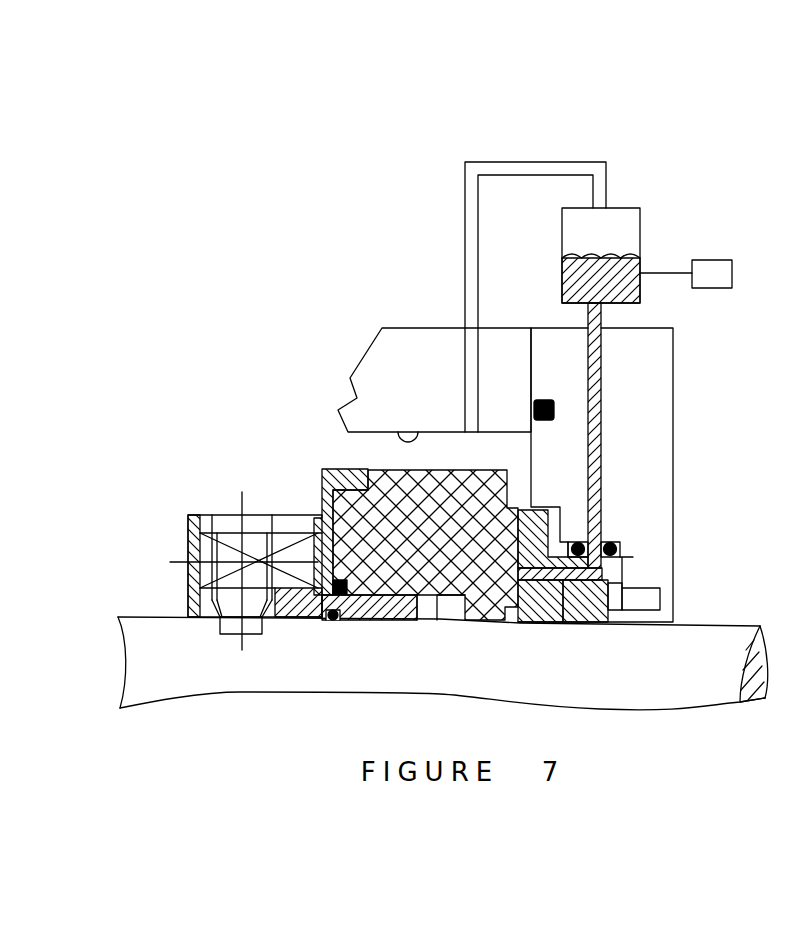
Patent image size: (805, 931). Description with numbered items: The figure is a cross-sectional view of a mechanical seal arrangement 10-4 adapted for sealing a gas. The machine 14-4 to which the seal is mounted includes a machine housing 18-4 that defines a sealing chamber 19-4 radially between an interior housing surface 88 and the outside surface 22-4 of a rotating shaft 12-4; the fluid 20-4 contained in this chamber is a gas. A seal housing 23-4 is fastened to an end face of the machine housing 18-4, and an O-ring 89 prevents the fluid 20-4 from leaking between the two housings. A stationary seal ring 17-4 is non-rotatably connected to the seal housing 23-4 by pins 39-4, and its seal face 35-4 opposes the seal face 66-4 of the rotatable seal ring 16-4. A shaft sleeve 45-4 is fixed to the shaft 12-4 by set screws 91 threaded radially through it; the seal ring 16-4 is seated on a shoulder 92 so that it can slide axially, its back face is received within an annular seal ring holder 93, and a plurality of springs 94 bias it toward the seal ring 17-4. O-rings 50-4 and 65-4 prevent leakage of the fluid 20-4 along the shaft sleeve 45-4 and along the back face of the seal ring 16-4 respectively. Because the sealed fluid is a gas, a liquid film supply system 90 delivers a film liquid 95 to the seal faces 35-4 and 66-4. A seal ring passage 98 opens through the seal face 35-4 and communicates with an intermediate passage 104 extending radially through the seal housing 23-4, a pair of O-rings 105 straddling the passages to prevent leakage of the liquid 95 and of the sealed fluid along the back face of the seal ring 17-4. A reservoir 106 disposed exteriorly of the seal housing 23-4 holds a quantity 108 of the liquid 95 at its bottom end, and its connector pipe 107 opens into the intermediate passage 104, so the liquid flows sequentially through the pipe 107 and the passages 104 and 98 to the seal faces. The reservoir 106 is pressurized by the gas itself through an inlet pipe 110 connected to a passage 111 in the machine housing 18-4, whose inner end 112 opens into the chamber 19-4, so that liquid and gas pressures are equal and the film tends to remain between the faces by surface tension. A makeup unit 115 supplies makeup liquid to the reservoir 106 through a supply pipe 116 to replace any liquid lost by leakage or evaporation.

The seal arrangement 10-4 is at (700, 456).
The rotating shaft 12-4 is at (135, 690).
The machine 14-4 is at (186, 286).
The second rotatable seal ring 16-4 is at (452, 483).
The stationary seal ring 17-4 is at (593, 624).
The machine housing 18-4 is at (392, 328).
The sealing chamber 19-4 is at (347, 447).
The fluid 20-4 is at (310, 448).
The outside surface 22-4 is at (130, 612).
The seal housing 23-4 is at (670, 492).
The seal face 35-4 is at (517, 626).
The pins 39-4 is at (655, 595).
The shaft sleeve 45-4 is at (188, 519).
The O-ring 50-4 is at (332, 622).
The O-ring 65-4 is at (348, 595).
The seal face 66-4 is at (537, 596).
The interior housing surface 88 is at (414, 434).
The O-ring 89 is at (547, 400).
The liquid film supply system 90 is at (612, 148).
The set screws 91 is at (226, 627).
The shoulder 92 is at (417, 600).
The annular seal ring holder 93 is at (330, 493).
The springs 94 is at (295, 540).
The liquid 95 is at (633, 293).
The seal ring passage 98 is at (600, 576).
The intermediate passage 104 is at (598, 415).
The O-rings 105 is at (582, 545).
The reservoir 106 is at (630, 215).
The connector pipe 107 is at (598, 320).
The quantity of fluid 108 is at (605, 300).
The inlet pipe 110 is at (478, 168).
The passage 111 is at (470, 352).
The inner end 112 is at (467, 421).
The makeup unit 115 is at (732, 273).
The supply pipe 116 is at (673, 270).